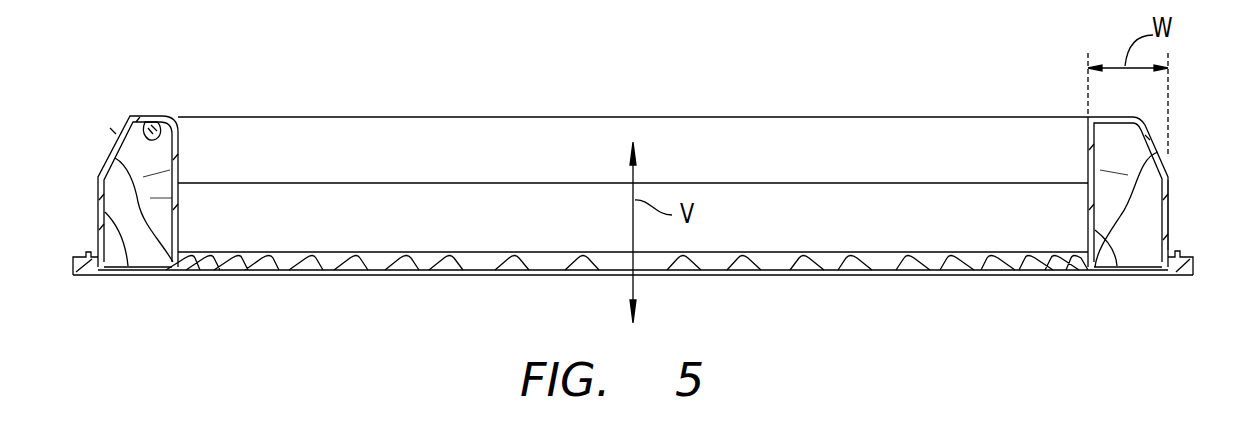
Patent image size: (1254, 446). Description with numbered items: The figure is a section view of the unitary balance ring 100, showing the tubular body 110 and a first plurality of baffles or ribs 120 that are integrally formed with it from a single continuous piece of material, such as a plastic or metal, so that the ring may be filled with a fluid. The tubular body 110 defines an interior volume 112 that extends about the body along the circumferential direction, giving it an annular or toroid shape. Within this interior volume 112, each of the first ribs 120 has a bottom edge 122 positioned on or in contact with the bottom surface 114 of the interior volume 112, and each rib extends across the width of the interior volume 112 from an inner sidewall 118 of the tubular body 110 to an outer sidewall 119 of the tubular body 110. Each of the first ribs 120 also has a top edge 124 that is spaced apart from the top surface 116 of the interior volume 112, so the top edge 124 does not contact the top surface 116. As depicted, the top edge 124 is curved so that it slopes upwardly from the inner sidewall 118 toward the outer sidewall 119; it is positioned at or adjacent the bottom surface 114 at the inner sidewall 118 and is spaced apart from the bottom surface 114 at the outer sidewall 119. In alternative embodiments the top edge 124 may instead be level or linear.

The unitary balance ring 100 is at (113, 66).
The tubular body 110 is at (717, 140).
The interior volume 112 is at (147, 198).
The bottom surface 114 is at (107, 223).
The top surface 116 is at (176, 128).
The inner sidewall 118 is at (1090, 200).
The outer sidewall 119 is at (1168, 183).
The first plurality of ribs 120 is at (120, 197).
The bottom edge 122 is at (144, 272).
The top edge 124 is at (140, 176).